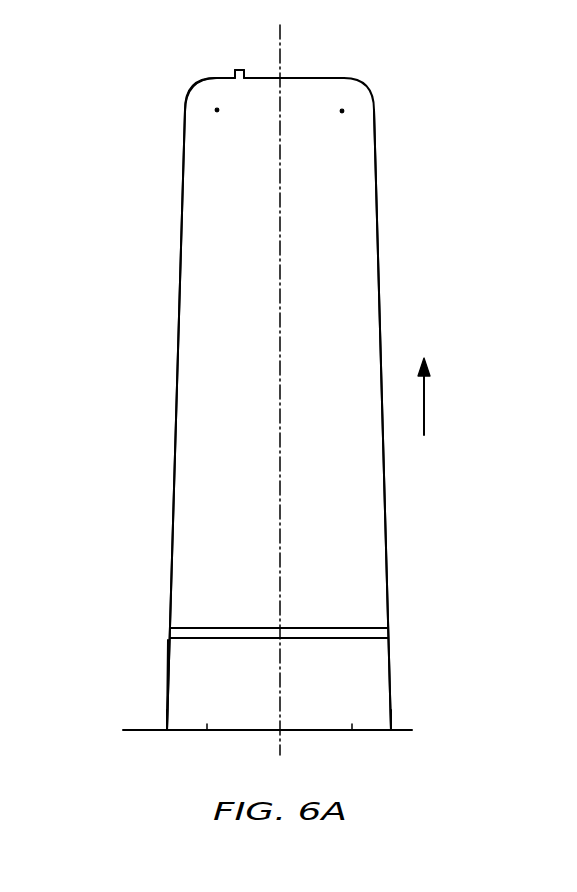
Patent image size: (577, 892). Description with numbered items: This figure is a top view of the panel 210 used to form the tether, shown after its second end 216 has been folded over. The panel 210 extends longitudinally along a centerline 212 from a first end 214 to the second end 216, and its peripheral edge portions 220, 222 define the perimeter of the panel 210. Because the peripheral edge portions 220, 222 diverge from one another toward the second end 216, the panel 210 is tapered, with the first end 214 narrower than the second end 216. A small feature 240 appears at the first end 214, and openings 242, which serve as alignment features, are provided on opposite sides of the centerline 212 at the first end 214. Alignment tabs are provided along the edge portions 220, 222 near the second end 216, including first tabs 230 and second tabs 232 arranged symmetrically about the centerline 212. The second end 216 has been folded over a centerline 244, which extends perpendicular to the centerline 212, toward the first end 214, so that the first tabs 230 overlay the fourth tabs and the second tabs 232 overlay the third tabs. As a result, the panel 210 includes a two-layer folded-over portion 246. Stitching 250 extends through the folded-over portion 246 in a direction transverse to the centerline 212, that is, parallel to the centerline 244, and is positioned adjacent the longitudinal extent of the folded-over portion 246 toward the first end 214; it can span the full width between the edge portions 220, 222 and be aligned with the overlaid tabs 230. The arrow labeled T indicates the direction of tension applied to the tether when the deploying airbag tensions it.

The panel 210 is at (377, 85).
The centerline 212 is at (281, 50).
The first end 214 is at (183, 78).
The second end 216 is at (193, 750).
The peripheral edge portion 220 is at (176, 375).
The peripheral edge portion 222 is at (379, 287).
The first tabs 230 is at (168, 638).
The second tabs 232 is at (166, 720).
The tab 240 is at (238, 70).
The openings 242 is at (215, 109).
The centerline 244 is at (130, 733).
The folded-over portion 246 is at (158, 670).
The stitching 250 is at (237, 637).
The tension T is at (426, 392).